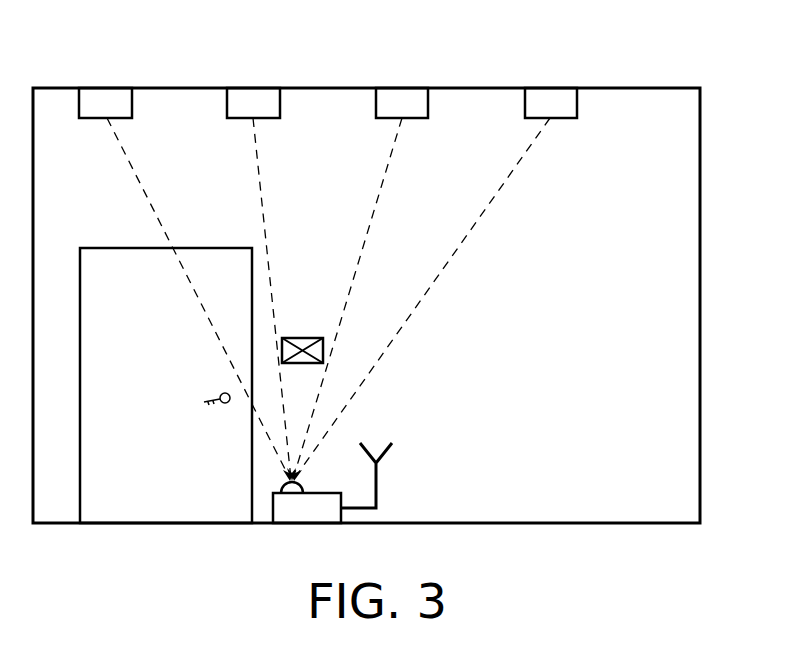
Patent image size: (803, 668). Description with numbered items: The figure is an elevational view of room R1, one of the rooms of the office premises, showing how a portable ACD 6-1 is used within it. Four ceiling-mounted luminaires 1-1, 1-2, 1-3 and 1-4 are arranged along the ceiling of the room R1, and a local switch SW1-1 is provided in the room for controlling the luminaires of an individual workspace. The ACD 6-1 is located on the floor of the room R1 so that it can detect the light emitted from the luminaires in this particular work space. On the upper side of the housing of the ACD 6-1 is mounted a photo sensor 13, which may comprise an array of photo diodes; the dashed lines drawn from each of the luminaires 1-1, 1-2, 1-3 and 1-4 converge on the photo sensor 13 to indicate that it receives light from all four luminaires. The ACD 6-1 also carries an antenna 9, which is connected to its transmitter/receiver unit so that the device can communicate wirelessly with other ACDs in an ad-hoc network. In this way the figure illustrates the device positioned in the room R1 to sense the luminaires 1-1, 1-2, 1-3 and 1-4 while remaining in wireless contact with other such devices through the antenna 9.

The luminaire 1-1 is at (115, 86).
The luminaire 1-2 is at (253, 86).
The luminaire 1-3 is at (400, 86).
The luminaire 1-4 is at (548, 86).
The room R1 is at (668, 120).
The switch SW1-1 is at (303, 338).
The photo sensor 13 is at (280, 487).
The ACD 6-1 is at (273, 508).
The antenna 9 is at (378, 487).